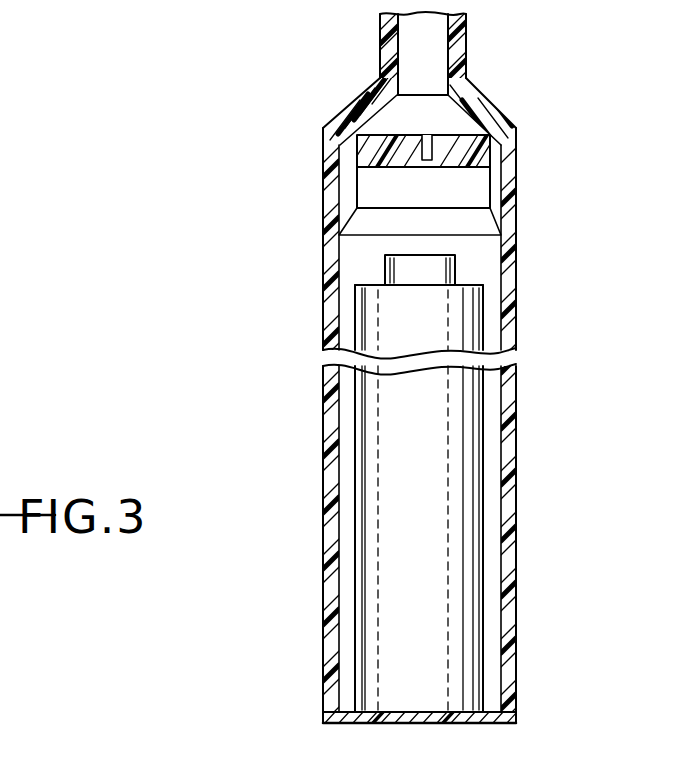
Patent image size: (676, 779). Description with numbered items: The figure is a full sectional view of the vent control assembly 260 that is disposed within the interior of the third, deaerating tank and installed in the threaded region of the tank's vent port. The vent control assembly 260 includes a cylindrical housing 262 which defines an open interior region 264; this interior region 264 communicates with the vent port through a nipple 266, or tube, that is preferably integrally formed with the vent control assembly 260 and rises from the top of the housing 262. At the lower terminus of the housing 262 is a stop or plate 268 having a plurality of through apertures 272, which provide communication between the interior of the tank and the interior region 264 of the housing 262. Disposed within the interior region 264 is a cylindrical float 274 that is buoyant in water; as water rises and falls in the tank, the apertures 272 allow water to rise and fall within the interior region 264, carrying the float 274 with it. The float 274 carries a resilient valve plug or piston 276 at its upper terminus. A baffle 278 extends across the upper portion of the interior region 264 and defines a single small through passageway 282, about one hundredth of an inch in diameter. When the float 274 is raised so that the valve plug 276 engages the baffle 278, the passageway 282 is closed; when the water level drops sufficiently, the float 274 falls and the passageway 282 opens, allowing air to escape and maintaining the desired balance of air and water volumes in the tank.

The vent control assembly 260 is at (248, 102).
The cylindrical housing 262 is at (516, 241).
The open interior region 264 is at (452, 202).
The nipple 266 is at (466, 31).
The stop or plate 268 is at (487, 723).
The through apertures 272 is at (454, 723).
The cylindrical float 274 is at (440, 518).
The resilient valve plug or piston 276 is at (385, 275).
The baffle 278 is at (358, 149).
The passageway 282 is at (428, 137).